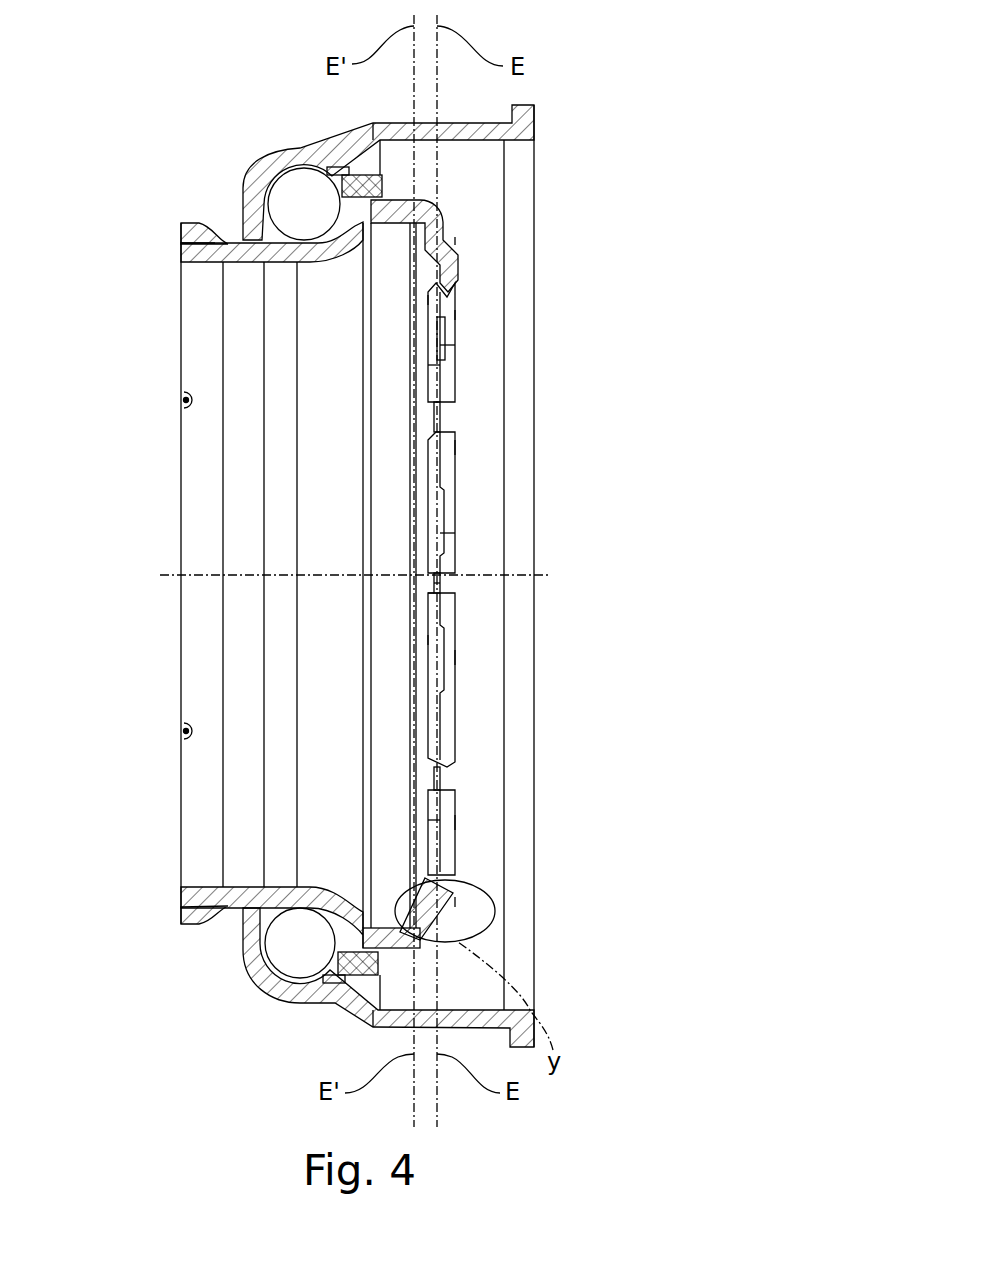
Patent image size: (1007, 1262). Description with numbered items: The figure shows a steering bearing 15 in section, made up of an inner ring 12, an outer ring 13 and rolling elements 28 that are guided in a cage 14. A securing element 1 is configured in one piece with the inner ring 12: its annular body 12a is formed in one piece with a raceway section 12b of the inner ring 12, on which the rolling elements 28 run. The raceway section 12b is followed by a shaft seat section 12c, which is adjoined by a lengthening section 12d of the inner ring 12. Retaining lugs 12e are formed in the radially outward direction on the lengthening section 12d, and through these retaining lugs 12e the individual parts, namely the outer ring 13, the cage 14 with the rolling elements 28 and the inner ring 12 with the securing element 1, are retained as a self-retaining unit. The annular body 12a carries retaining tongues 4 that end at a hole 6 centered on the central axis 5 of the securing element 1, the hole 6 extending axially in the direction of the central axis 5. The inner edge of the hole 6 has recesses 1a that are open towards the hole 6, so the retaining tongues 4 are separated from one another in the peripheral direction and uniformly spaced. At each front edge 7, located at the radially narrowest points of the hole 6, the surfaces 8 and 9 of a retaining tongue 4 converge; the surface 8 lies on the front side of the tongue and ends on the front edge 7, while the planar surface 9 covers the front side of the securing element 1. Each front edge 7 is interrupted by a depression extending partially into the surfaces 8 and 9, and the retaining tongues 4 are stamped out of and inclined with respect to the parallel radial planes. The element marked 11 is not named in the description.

The securing element 1 is at (422, 474).
The recesses 1a is at (437, 450).
The retaining tongues 4 is at (458, 240).
The central axis 5 is at (447, 580).
The hole 6 is at (426, 592).
The front edges 7 is at (433, 300).
The surface 8 is at (448, 347).
The surface 9 is at (437, 368).
The stop 11 is at (453, 315).
The inner ring 12 is at (286, 262).
The annular body 12a is at (384, 228).
The raceway section 12b is at (242, 262).
The shaft seat section 12c is at (242, 887).
The lengthening section 12d is at (206, 262).
The retaining lugs 12e is at (187, 236).
The outer ring 13 is at (362, 143).
The cage 14 is at (382, 184).
The steering bearing 15 is at (601, 66).
The rolling elements 28 is at (300, 196).